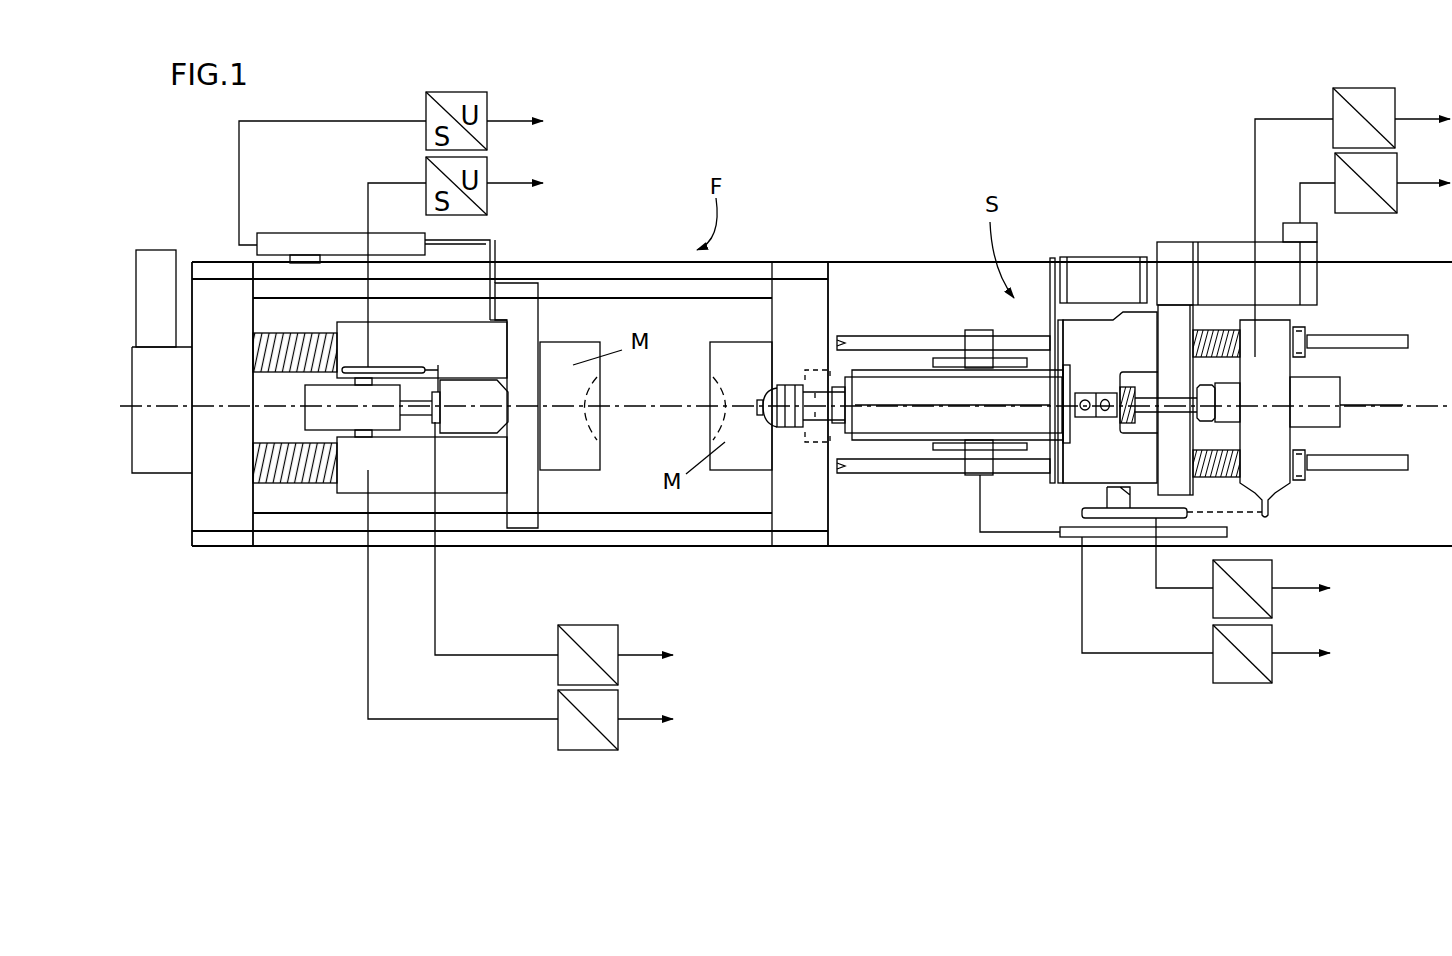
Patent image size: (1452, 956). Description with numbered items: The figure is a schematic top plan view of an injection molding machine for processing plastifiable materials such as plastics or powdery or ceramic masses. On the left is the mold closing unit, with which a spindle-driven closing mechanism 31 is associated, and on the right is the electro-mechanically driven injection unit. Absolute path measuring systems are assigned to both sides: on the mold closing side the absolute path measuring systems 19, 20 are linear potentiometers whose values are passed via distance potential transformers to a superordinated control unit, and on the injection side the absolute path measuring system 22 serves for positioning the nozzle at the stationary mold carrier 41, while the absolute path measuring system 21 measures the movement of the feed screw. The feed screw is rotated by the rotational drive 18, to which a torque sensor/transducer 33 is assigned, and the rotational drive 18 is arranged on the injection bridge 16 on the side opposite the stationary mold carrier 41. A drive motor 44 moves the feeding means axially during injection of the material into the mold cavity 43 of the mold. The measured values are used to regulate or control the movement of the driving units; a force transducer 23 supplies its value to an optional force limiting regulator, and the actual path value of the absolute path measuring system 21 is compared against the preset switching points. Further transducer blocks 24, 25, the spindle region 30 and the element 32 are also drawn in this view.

The injection bridge 16 is at (1180, 423).
The rotational drive 18 is at (1323, 390).
The absolute path measuring system 19 is at (400, 372).
The absolute path measuring system 20 is at (327, 240).
The absolute path measuring system 21 is at (1088, 513).
The absolute path measuring system 22 is at (1119, 540).
The force transducer 23 is at (1388, 131).
The force/voltage converter 24 is at (583, 636).
The force/voltage converter 25 is at (590, 742).
The spindle 30 is at (880, 388).
The closing mechanism 31 is at (500, 357).
The piston 32 is at (330, 420).
The torque sensor/transducer 33 is at (1368, 207).
The stationary mold carrier 41 is at (795, 300).
The mold cavity 43 is at (694, 393).
The drive motor 44 is at (1235, 255).